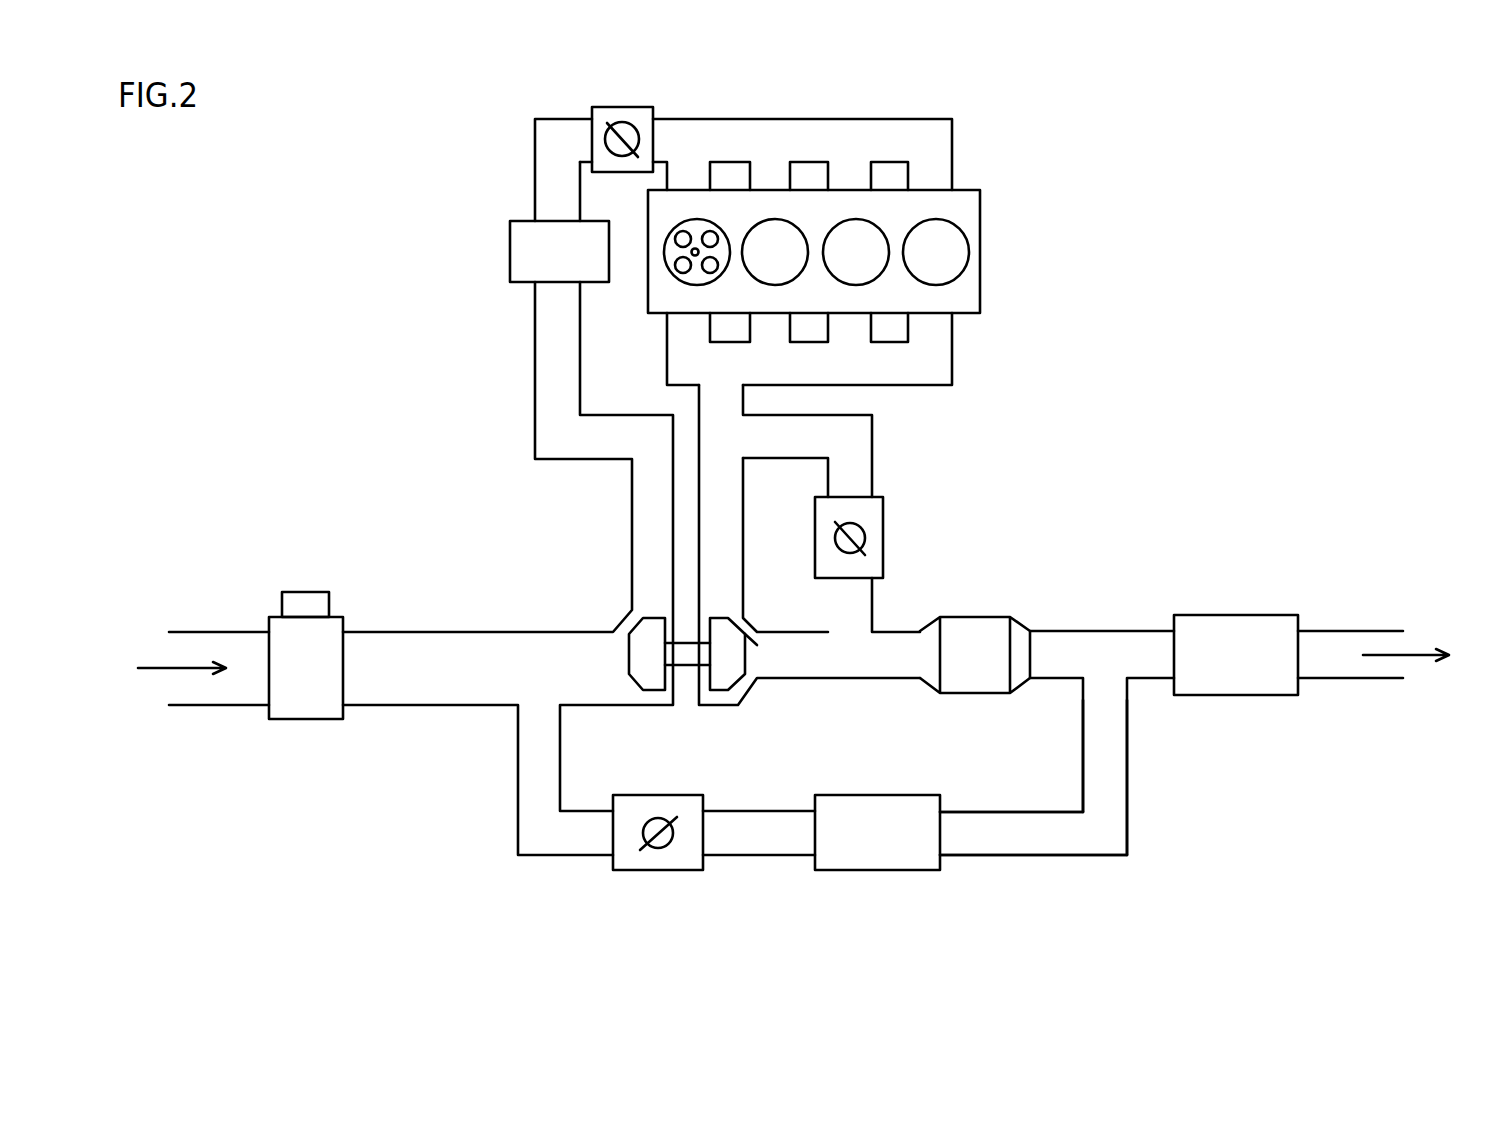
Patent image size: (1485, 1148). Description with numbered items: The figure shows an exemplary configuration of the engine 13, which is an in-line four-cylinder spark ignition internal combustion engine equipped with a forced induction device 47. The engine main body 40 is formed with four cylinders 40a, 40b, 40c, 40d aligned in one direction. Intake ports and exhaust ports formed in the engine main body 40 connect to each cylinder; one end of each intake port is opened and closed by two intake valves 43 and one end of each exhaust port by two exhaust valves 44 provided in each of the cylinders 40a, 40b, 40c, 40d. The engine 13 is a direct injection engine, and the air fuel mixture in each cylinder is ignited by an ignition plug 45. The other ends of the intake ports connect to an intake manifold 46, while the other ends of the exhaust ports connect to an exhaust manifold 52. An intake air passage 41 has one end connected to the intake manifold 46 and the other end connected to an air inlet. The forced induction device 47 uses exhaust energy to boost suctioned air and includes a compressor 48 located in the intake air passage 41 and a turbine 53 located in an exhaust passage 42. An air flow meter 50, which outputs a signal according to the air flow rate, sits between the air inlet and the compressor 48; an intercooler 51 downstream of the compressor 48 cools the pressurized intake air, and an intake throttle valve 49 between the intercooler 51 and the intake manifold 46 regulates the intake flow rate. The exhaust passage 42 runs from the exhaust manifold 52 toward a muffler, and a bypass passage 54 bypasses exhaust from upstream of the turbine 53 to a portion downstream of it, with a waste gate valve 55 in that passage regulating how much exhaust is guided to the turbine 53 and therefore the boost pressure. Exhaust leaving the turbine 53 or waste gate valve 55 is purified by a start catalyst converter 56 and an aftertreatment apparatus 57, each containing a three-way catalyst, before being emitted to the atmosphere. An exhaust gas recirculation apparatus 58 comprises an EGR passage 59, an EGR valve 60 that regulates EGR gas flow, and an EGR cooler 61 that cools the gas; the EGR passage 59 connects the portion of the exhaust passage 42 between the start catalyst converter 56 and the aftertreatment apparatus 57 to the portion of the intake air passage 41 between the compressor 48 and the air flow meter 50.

The engine 13 is at (1205, 345).
The engine main body 40 is at (983, 233).
The cylinder 40a is at (687, 218).
The cylinder 40b is at (767, 218).
The cylinder 40c is at (845, 218).
The cylinder 40d is at (923, 218).
The intake air passage 41 is at (528, 379).
The exhaust passage 42 is at (1103, 624).
The intake valve 43 is at (675, 236).
The exhaust valve 44 is at (674, 270).
The ignition plug 45 is at (692, 253).
The intake manifold 46 is at (954, 130).
The forced induction device 47 is at (756, 659).
The compressor 48 is at (642, 667).
The intake throttle valve 49 is at (592, 139).
The air flow meter 50 is at (307, 712).
The intercooler 51 is at (518, 253).
The exhaust manifold 52 is at (948, 350).
The turbine 53 is at (723, 668).
The bypass passage 54 is at (873, 452).
The waste gate valve 55 is at (872, 520).
The start catalyst converter 56 is at (975, 627).
The aftertreatment apparatus 57 is at (1237, 627).
The exhaust gas recirculation (EGR) apparatus 58 is at (1138, 791).
The EGR passage 59 is at (1043, 843).
The EGR valve 60 is at (677, 858).
The EGR cooler 61 is at (882, 858).